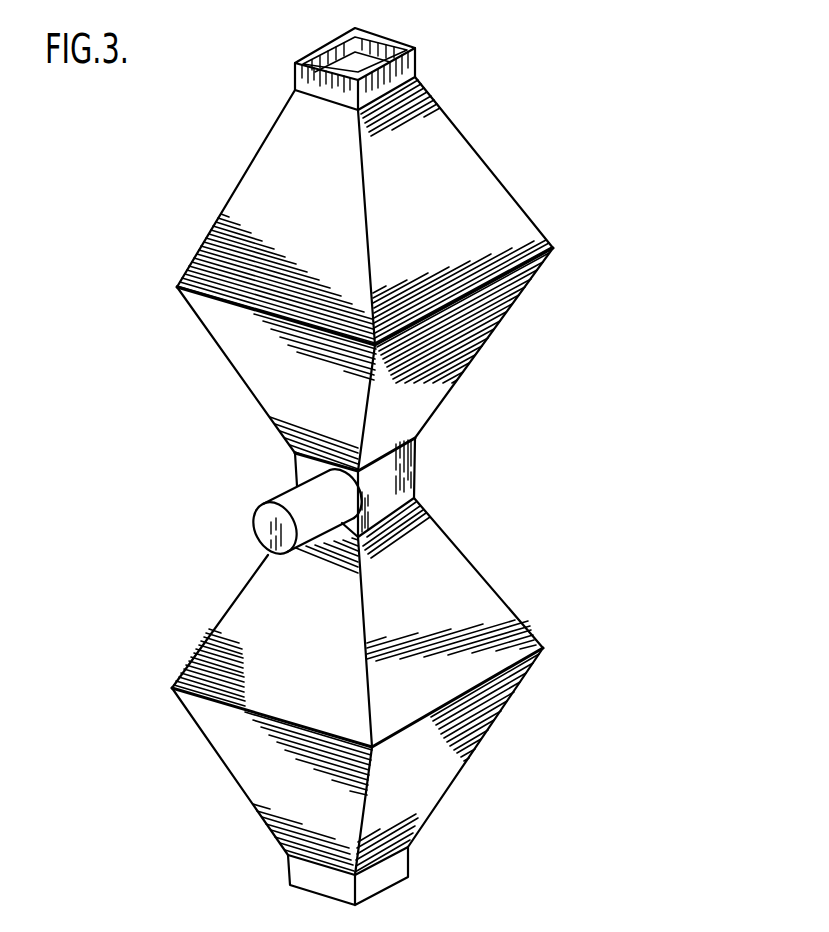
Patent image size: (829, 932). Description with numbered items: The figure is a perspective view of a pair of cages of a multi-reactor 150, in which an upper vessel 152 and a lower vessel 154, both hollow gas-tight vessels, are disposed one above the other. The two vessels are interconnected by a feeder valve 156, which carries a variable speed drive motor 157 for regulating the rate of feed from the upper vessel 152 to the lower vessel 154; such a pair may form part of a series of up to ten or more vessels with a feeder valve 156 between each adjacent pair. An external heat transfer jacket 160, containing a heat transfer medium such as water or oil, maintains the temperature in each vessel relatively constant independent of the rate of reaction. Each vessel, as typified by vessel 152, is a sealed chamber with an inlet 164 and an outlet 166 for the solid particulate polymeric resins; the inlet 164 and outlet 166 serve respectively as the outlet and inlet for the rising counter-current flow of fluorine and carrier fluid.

The multi-reactor 150 is at (520, 390).
The upper vessel 152 is at (487, 330).
The lower vessel 154 is at (493, 625).
The feeder valve 156 is at (414, 497).
The variable speed drive motor 157 is at (272, 503).
The external heat transfer jacket 160 is at (453, 757).
The inlet 164 is at (378, 53).
The outlet 166 is at (420, 438).